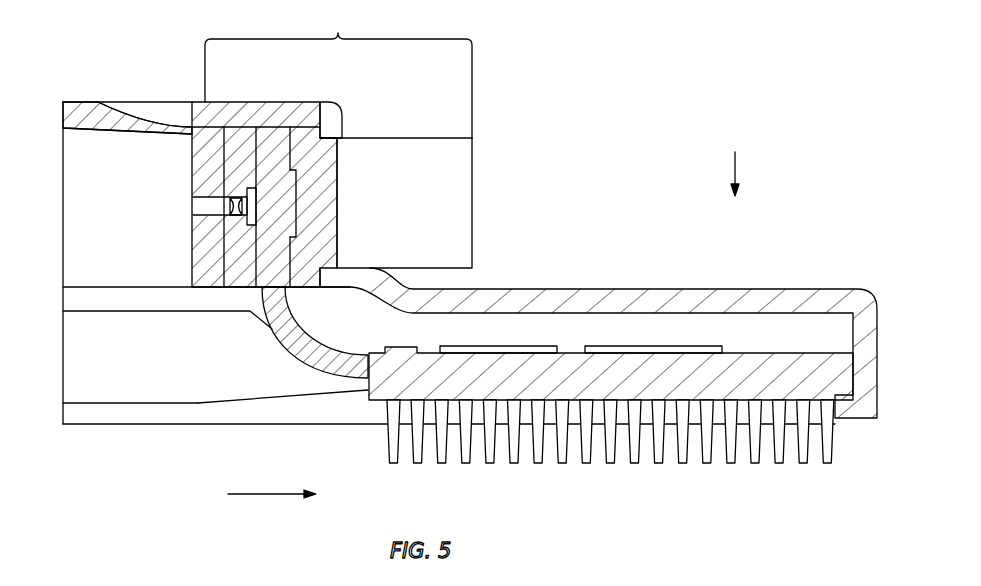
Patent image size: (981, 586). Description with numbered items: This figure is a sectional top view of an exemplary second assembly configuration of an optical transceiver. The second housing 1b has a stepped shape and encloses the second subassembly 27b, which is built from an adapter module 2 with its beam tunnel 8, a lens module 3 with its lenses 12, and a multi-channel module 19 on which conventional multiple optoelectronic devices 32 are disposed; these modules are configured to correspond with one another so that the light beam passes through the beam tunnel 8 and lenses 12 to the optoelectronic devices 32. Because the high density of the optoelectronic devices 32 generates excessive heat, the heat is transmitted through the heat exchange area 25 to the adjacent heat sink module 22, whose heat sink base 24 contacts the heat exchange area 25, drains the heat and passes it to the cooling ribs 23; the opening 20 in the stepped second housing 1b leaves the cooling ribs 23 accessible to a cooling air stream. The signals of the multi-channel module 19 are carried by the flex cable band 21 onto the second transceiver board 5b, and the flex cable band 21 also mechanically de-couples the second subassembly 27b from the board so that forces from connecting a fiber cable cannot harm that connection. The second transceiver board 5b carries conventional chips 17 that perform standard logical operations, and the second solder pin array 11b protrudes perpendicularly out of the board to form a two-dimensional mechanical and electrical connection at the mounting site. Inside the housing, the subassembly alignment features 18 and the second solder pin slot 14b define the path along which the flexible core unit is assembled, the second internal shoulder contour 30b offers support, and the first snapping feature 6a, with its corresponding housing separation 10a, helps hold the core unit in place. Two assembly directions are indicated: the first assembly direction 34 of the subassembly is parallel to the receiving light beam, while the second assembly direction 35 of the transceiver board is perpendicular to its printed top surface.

The second housing 1b is at (692, 288).
The adapter module 2 is at (225, 102).
The lens module 3 is at (240, 127).
The second transceiver board 5b is at (772, 358).
The first snapping feature 6a is at (150, 128).
The beam tunnel 8 is at (198, 207).
The housing separation 10a is at (165, 102).
The second solder pin array 11b is at (835, 470).
The lenses 12 is at (237, 217).
The second solder pin slot 14b is at (198, 403).
The chips 17 is at (530, 346).
The subassembly alignment features 18 is at (72, 300).
The multi-channel module 19 is at (267, 132).
The opening 20 is at (332, 112).
The flex cable band 21 is at (337, 385).
The heat sink module 22 is at (433, 138).
The cooling ribs 23 is at (467, 173).
The heat sink base 24 is at (295, 132).
The heat exchange area 25 is at (297, 188).
The second subassembly 27b is at (338, 73).
The second internal shoulder contour 30b is at (320, 355).
The multiple optoelectronic devices 32 is at (250, 203).
The first assembly direction 34 is at (272, 484).
The second assembly direction 35 is at (748, 174).